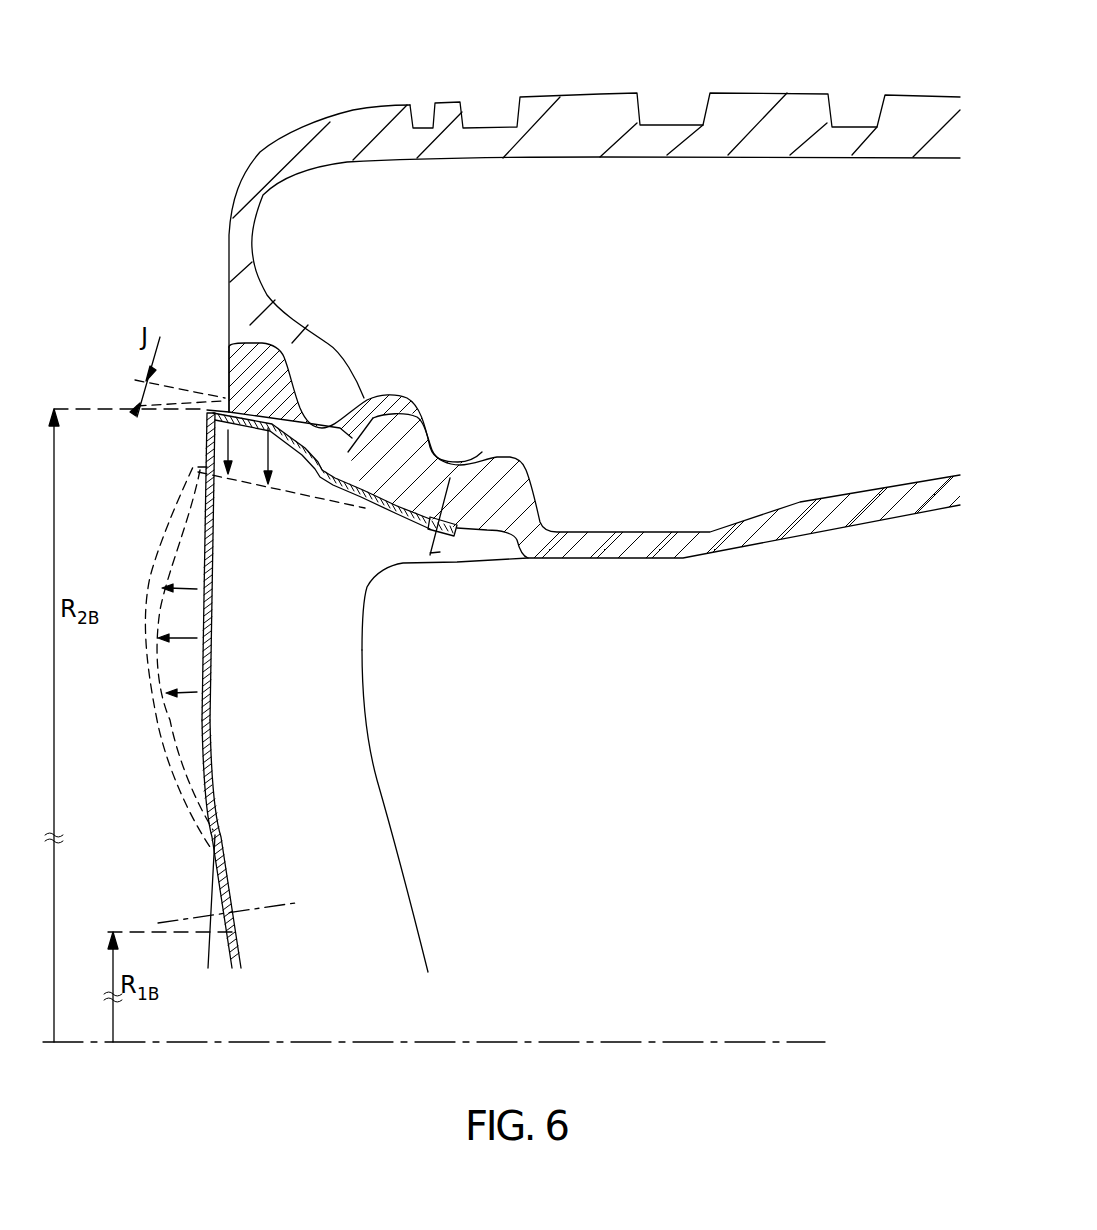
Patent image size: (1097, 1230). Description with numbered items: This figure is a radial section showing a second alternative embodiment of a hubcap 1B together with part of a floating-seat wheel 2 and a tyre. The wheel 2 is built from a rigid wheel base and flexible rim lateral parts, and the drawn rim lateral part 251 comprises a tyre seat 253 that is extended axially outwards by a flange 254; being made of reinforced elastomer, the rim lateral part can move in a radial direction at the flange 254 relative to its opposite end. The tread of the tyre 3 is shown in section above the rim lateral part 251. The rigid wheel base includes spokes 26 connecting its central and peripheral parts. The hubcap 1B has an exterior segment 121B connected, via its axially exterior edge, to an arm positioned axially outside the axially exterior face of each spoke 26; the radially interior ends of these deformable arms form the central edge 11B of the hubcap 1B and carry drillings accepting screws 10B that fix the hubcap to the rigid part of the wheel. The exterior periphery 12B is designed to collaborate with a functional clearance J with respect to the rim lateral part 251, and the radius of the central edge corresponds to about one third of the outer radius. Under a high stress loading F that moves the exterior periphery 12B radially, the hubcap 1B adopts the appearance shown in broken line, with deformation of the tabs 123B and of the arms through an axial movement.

The floating-seat wheel 2 is at (676, 740).
The tread 3 is at (760, 96).
The spoke 26 is at (345, 802).
The rim lateral part 251 is at (410, 397).
The tyre seat 253 is at (327, 395).
The flange 254 is at (260, 377).
The screw 10B is at (457, 562).
The hubcap 1B is at (190, 663).
The central edge 11B is at (198, 888).
The exterior periphery 12B is at (240, 483).
The exterior segment 121B is at (207, 440).
The tab 123B is at (373, 513).